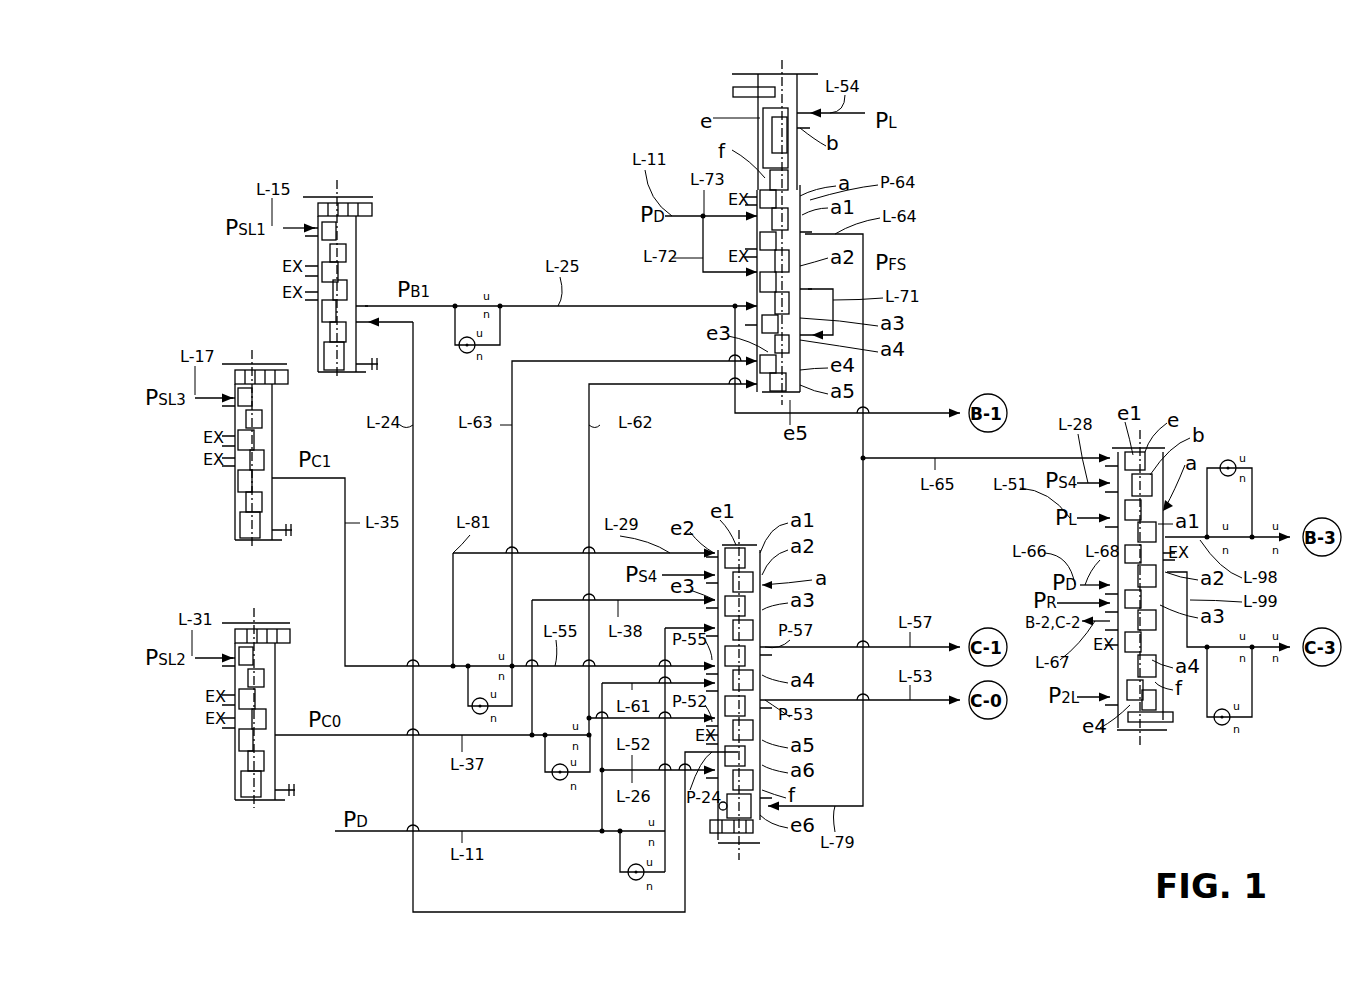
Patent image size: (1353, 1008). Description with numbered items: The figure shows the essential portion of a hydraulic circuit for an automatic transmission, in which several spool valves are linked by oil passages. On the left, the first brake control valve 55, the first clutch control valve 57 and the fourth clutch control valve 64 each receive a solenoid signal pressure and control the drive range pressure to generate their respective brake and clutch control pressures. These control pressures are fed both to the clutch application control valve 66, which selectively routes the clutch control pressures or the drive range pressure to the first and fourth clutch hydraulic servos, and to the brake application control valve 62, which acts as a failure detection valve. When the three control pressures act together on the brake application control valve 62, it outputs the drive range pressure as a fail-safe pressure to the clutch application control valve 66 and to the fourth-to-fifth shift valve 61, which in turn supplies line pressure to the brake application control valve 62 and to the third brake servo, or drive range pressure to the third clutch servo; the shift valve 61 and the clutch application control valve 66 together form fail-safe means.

The B-1 control valve 55 is at (368, 184).
The C-1 control valve 57 is at (232, 350).
The C-0 control valve 64 is at (231, 613).
The B-1 application control valve 62 is at (796, 73).
The clutch application control valve 66 is at (752, 535).
The 4-5 shift valve 61 is at (1160, 423).